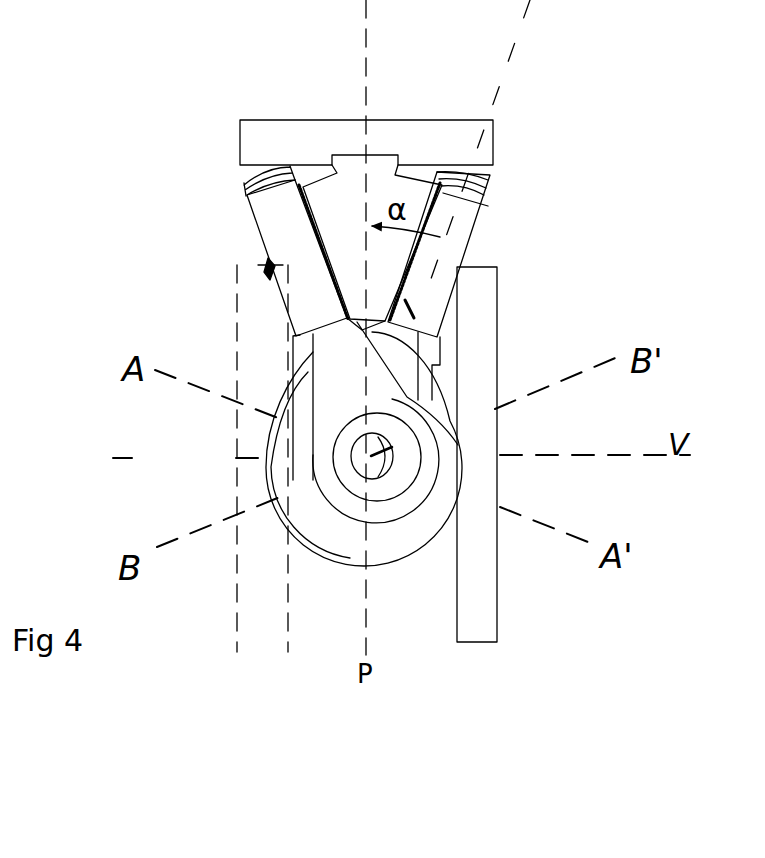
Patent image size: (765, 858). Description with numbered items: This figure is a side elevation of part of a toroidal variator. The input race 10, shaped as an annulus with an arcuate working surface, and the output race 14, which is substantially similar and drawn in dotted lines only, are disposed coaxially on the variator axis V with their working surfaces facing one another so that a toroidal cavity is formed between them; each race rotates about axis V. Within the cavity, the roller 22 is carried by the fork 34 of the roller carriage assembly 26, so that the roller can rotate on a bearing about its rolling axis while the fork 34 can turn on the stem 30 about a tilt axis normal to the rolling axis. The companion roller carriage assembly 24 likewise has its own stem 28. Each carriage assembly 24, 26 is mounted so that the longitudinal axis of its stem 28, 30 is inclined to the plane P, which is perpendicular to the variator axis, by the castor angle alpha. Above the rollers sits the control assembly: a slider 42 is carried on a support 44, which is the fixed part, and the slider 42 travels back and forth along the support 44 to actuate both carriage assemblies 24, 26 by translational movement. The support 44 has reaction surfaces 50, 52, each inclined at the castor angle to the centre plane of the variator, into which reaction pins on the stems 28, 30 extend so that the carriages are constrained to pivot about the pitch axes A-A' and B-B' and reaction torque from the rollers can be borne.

The input race 10 is at (500, 305).
The output race 14 is at (237, 468).
The roller 22 is at (304, 552).
The roller carriage assembly 24 is at (489, 213).
The roller carriage assembly 26 is at (283, 331).
The stem 28 is at (470, 237).
The stem 30 is at (248, 212).
The fork 34 is at (318, 428).
The slider 42 is at (240, 118).
The support 44 is at (415, 178).
The reaction surface 50 is at (406, 303).
The reaction surface 52 is at (326, 292).